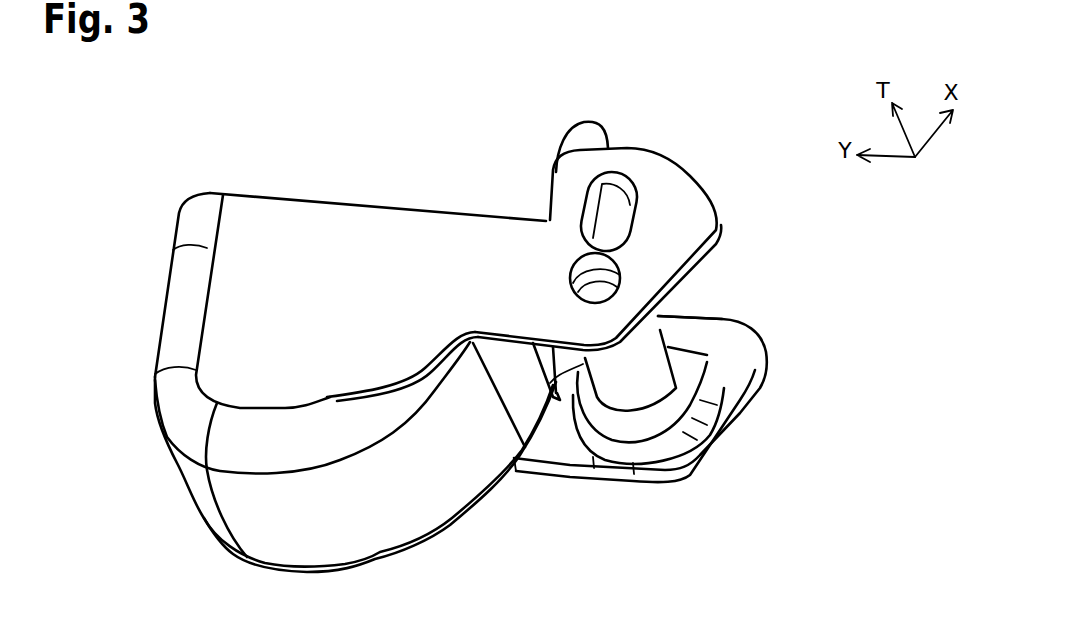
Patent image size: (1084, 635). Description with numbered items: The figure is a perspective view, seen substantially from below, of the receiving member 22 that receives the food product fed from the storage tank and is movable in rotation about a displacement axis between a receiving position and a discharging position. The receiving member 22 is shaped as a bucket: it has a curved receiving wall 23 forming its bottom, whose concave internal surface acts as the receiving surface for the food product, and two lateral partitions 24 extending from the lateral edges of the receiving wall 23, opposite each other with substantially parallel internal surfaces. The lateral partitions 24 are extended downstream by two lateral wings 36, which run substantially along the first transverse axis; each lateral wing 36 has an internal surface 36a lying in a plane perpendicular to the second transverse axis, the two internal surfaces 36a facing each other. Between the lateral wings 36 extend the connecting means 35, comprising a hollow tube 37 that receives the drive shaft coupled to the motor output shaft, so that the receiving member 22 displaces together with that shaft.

The receiving member 22 is at (768, 210).
The receiving wall 23 is at (385, 493).
The lateral partitions 24 is at (311, 262).
The connecting means 35 is at (707, 357).
The lateral wings 36 is at (665, 207).
The internal surface 36a is at (731, 317).
The hollow tube 37 is at (643, 383).